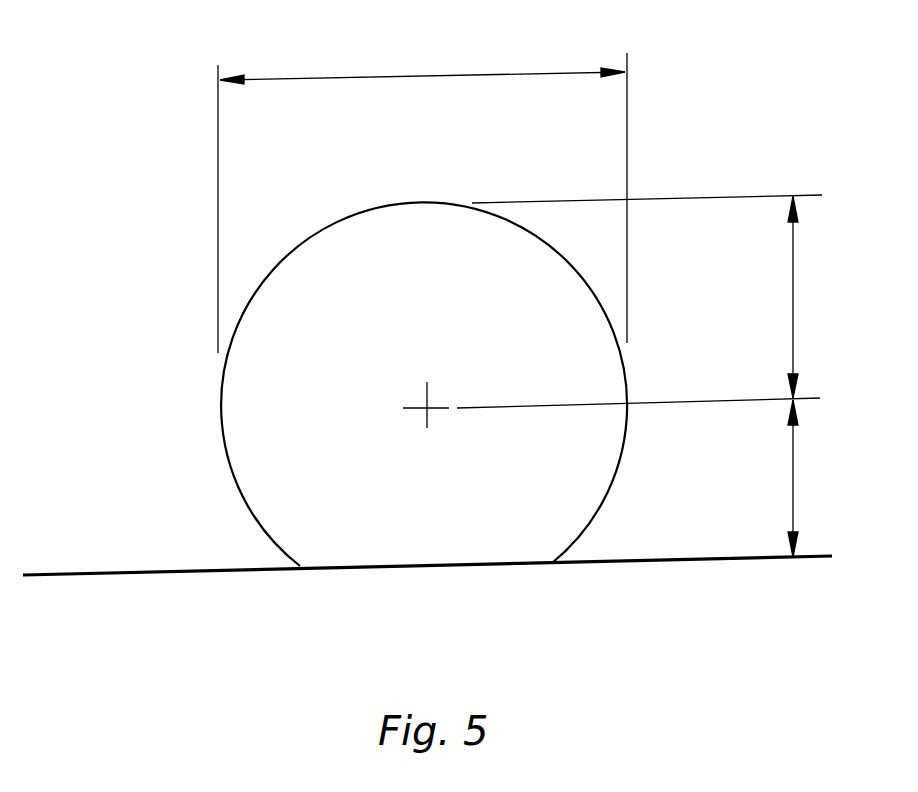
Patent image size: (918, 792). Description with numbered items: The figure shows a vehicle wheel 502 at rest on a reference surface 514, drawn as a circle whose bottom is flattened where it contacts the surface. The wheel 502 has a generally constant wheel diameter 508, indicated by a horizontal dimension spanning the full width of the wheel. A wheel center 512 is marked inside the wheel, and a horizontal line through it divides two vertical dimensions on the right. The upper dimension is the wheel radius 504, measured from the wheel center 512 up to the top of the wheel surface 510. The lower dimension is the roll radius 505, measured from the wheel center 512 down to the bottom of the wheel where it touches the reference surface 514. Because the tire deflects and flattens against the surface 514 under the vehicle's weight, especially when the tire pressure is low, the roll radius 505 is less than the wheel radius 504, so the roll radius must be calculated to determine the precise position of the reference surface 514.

The vehicle wheel 502 is at (345, 379).
The wheel radius 504 is at (794, 293).
The roll radius 505 is at (794, 473).
The wheel diameter 508 is at (430, 76).
The wheel surface 510 is at (289, 263).
The wheel center 512 is at (422, 404).
The reference surface 514 is at (138, 570).